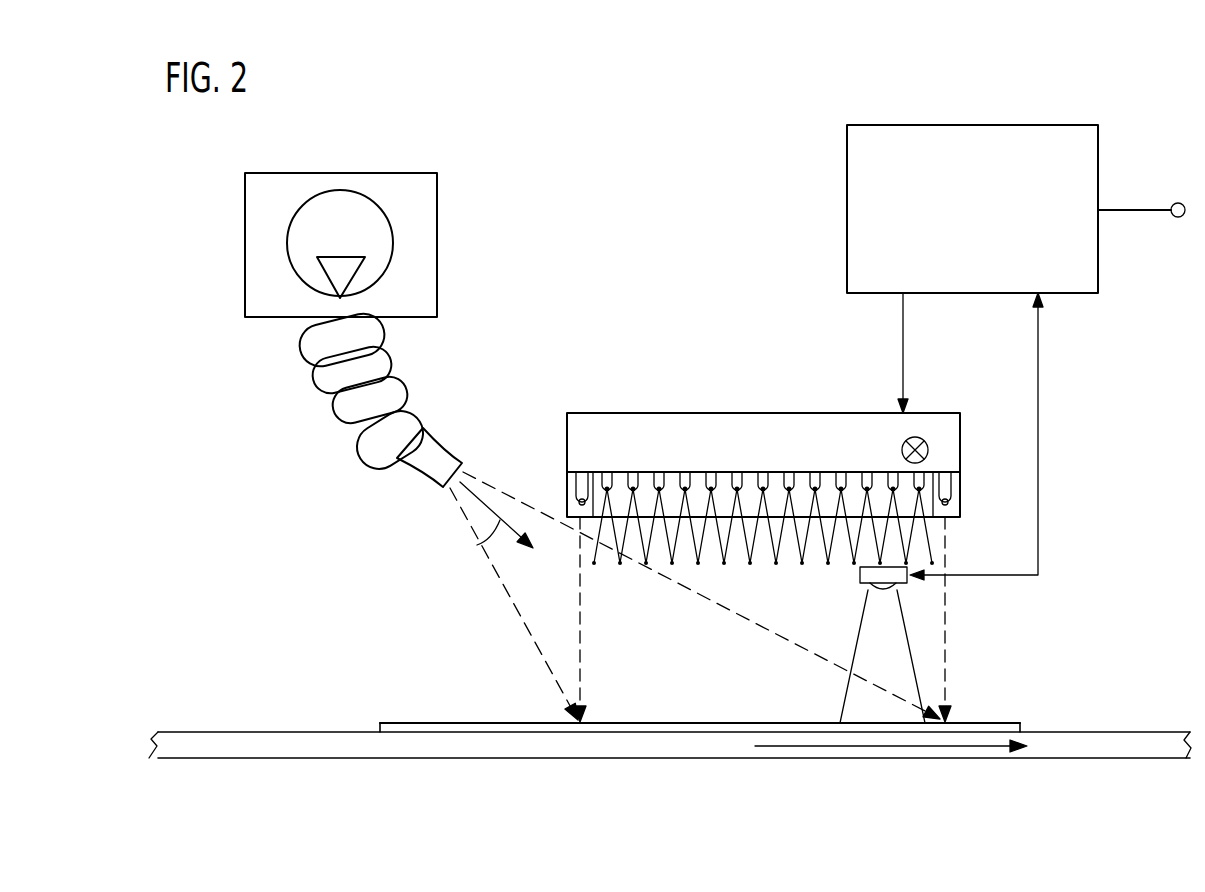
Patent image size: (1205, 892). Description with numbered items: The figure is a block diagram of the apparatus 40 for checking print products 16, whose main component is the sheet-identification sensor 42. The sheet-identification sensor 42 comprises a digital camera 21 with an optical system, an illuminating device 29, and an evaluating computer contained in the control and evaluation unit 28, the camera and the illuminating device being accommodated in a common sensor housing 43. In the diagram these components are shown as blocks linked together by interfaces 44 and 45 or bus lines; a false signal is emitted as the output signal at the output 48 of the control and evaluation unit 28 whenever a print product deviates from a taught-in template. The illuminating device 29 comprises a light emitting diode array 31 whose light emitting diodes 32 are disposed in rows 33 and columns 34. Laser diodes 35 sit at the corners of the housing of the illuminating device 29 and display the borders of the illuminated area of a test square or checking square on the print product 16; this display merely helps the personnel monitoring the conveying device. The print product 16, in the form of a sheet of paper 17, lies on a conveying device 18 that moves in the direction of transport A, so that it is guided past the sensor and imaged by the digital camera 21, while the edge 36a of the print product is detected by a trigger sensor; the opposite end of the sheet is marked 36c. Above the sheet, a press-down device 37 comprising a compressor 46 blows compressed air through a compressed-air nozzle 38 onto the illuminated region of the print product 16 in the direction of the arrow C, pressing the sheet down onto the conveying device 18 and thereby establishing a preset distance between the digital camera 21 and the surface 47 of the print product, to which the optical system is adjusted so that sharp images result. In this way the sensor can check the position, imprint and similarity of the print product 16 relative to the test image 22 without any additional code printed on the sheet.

The print product 16 is at (700, 700).
The sheet of paper 17 is at (510, 710).
The conveying device 18 is at (555, 758).
The digital camera 21 is at (856, 578).
The test image 22 is at (866, 711).
The control and evaluation unit 28 is at (855, 205).
The illuminating device 29 is at (763, 440).
The light emitting diode array 31 is at (801, 499).
The light emitting diodes 32 is at (801, 499).
The rows 33 is at (931, 447).
The columns 34 is at (884, 501).
The laser diodes 35 is at (950, 482).
The edge of the print product 36a is at (1021, 724).
The layer start 36c is at (370, 723).
The press-down device 37 is at (415, 195).
The compressed-air nozzle 38 is at (433, 452).
The apparatus for checking print products 40 is at (763, 410).
The sheet-identification sensor 42 is at (1071, 475).
The sensor housing 43 is at (765, 420).
The interface 44 is at (1040, 350).
The interface 45 is at (905, 350).
The compressor 46 is at (345, 205).
The surface of the print product 47 is at (653, 722).
The output 48 is at (1178, 203).
The direction of transport A is at (833, 758).
The direction of arrow C is at (477, 545).